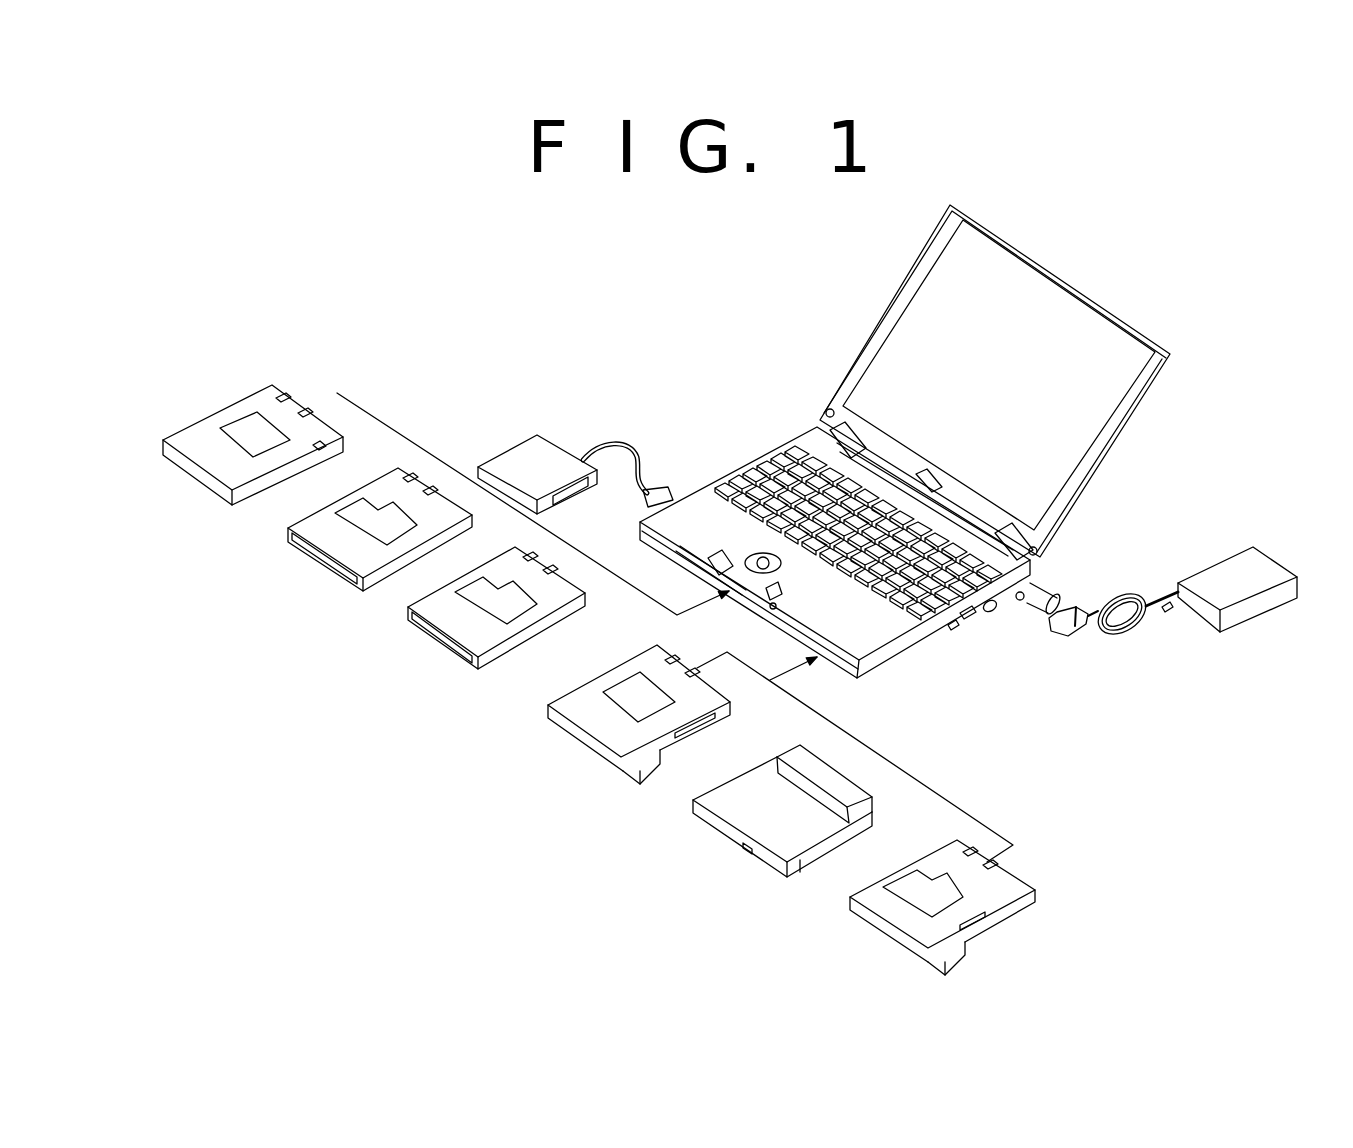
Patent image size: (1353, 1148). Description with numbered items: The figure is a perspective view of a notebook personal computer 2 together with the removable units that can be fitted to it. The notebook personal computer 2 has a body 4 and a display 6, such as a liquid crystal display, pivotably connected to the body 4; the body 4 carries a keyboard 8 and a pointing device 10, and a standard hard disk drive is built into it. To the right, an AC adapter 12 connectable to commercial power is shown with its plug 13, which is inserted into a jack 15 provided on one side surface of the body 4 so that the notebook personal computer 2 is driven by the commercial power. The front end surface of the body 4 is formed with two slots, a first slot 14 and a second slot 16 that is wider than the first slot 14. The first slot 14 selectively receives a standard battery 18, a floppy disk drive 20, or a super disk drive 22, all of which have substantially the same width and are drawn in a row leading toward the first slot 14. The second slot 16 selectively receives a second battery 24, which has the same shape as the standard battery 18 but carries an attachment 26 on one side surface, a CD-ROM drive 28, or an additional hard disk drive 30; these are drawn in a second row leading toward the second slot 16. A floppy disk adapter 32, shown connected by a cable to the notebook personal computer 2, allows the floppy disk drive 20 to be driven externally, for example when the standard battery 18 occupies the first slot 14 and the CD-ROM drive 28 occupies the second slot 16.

The notebook personal computer 2 is at (753, 533).
The body 4 is at (700, 625).
The display 6 is at (917, 333).
The keyboard 8 is at (787, 477).
The pointing device 10 is at (767, 568).
The AC adapter 12 is at (1232, 570).
The plug 13 is at (1053, 637).
The first slot 14 is at (722, 580).
The jack 15 is at (1019, 602).
The second slot 16 is at (832, 660).
The standard battery 18 is at (205, 430).
The floppy disk drive 20 is at (347, 553).
The super disk drive 22 is at (455, 625).
The second battery 24 is at (576, 732).
The attachment 26 is at (625, 770).
The CD-ROM drive 28 is at (740, 823).
The additional hard disk drive 30 is at (893, 920).
The floppy disk adapter 32 is at (530, 455).